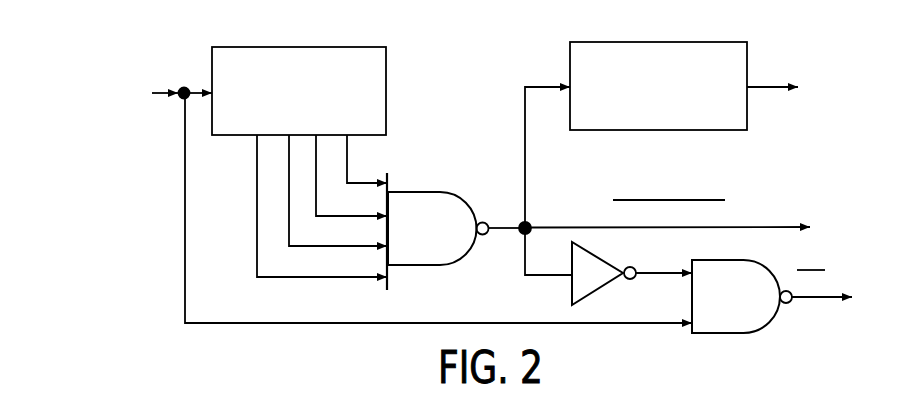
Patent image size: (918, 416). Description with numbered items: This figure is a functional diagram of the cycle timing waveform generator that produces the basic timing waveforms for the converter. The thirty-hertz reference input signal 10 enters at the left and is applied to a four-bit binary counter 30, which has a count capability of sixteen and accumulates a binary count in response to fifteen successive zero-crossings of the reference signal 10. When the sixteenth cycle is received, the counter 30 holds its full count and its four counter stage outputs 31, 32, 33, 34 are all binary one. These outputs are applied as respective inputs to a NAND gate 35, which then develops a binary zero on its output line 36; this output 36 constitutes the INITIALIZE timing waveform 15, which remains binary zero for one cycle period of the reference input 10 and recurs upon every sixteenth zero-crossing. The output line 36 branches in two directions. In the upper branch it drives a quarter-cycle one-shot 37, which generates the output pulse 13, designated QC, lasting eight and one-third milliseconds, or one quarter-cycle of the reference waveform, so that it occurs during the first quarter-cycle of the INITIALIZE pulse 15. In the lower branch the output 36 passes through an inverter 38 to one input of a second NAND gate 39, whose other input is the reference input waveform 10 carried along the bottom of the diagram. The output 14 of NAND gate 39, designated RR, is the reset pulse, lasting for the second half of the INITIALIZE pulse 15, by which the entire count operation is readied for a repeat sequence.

The 30-Hz reference input signal 10 is at (181, 88).
The output pulse QC 13 is at (758, 89).
The output RR 14 is at (820, 298).
The INITIALIZE timing waveform 15 is at (787, 226).
The four-bit binary counter 30 is at (344, 47).
The counter stage output 31 is at (377, 183).
The counter stage output 32 is at (326, 216).
The counter stage output 33 is at (322, 246).
The counter stage output 34 is at (324, 277).
The NAND gate 35 is at (460, 192).
The output line 36 is at (528, 222).
The quarter-cycle one-shot 37 is at (686, 42).
The inverter 38 is at (610, 278).
The NAND gate 39 is at (736, 260).